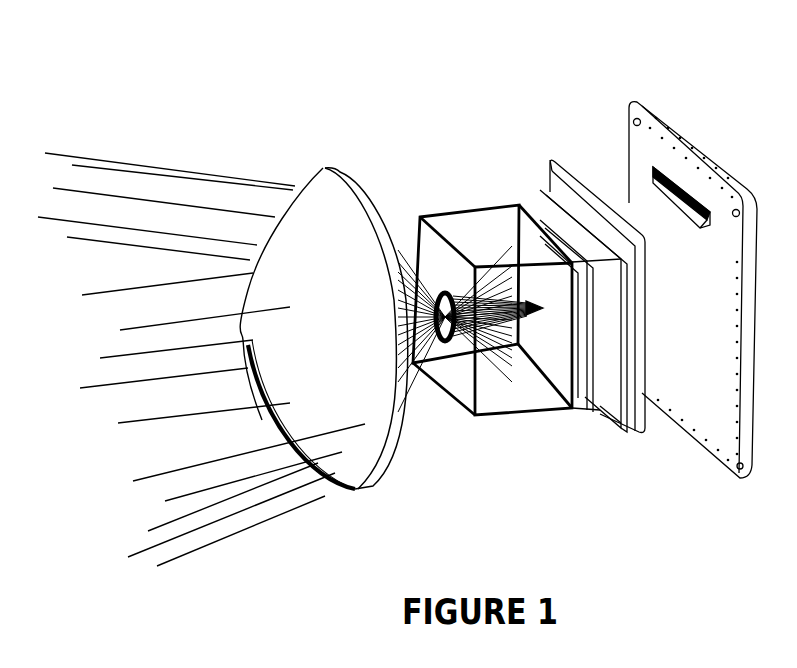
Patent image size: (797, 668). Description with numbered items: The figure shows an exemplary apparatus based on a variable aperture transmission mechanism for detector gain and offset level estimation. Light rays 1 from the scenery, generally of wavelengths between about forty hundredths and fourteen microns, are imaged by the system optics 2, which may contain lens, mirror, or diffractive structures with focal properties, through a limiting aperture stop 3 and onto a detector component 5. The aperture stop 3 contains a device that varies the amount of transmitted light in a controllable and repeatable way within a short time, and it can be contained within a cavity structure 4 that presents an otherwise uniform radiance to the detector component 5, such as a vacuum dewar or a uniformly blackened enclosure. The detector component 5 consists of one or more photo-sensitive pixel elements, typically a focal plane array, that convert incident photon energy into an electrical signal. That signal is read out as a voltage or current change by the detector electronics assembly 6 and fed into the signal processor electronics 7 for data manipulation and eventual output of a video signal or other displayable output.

The light rays 1 is at (200, 173).
The system optics 2 is at (307, 168).
The aperture stop 3 is at (415, 237).
The cavity structure 4 is at (455, 205).
The detector component 5 is at (553, 338).
The detector electronics assembly 6 is at (537, 357).
The signal processor electronics 7 is at (677, 385).